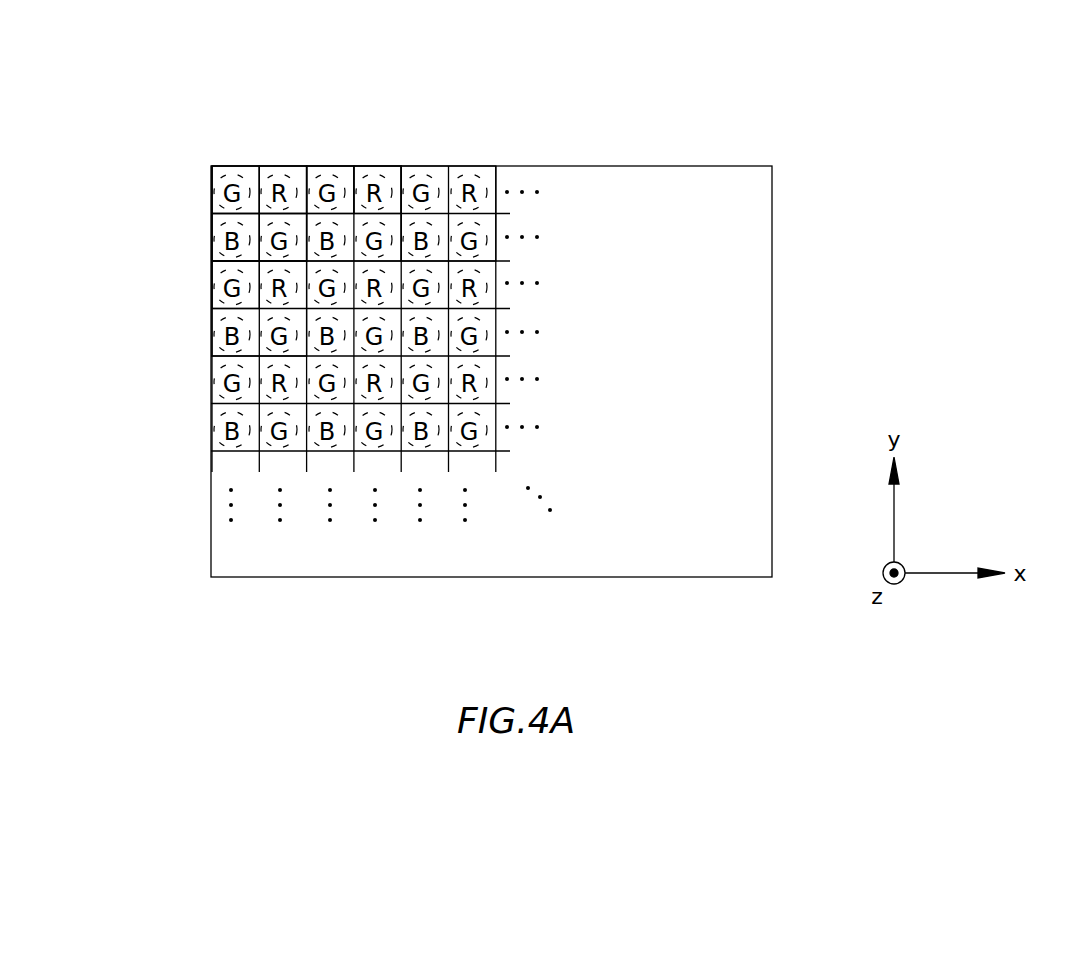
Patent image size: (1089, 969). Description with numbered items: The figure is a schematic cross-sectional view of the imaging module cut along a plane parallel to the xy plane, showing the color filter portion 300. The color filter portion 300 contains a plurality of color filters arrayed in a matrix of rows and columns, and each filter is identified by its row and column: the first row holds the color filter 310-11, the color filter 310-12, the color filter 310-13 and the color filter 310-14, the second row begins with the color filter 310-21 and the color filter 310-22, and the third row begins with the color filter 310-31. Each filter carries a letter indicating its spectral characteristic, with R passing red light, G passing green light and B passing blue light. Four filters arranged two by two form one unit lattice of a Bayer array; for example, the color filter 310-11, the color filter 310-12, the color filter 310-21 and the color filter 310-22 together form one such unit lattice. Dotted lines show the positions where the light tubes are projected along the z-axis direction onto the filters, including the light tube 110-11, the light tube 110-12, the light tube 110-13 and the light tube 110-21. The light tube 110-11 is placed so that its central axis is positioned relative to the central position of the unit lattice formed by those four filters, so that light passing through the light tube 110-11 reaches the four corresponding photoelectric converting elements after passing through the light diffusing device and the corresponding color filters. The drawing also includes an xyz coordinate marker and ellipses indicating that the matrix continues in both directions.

The color filter portion 300 is at (772, 252).
The color filter 310-11 is at (217, 164).
The color filter 310-12 is at (292, 165).
The color filter 310-13 is at (325, 165).
The color filter 310-14 is at (385, 165).
The color filter 310-21 is at (212, 242).
The color filter 310-22 is at (212, 213).
The color filter 310-31 is at (212, 270).
The light tube 110-11 is at (212, 190).
The light tube 110-12 is at (387, 185).
The light tube 110-13 is at (473, 178).
The light tube 110-21 is at (213, 322).